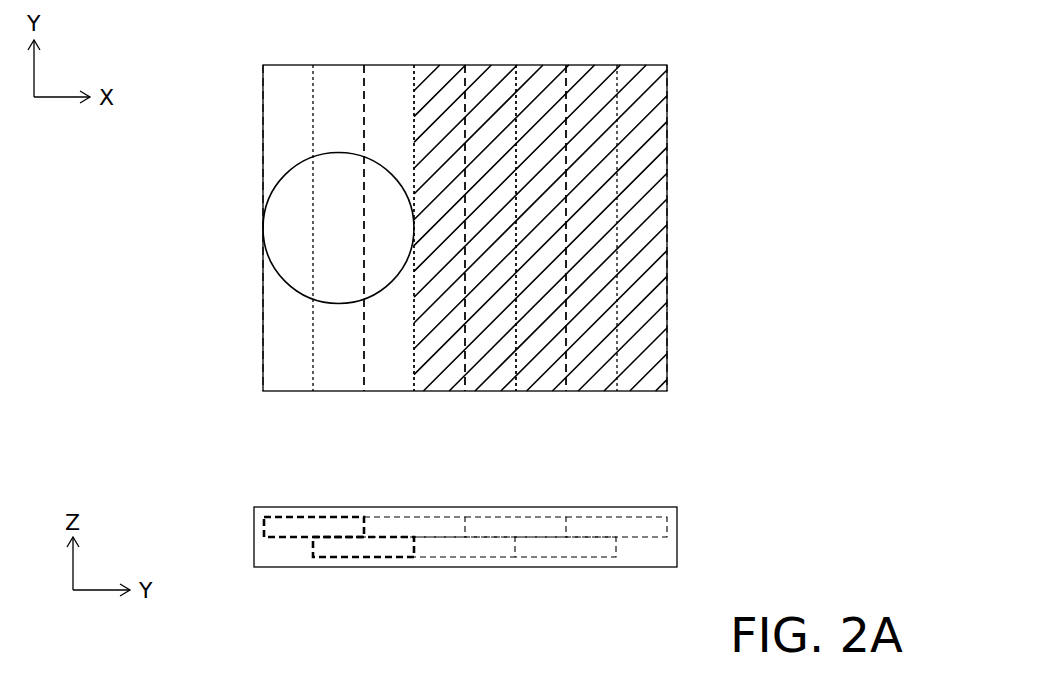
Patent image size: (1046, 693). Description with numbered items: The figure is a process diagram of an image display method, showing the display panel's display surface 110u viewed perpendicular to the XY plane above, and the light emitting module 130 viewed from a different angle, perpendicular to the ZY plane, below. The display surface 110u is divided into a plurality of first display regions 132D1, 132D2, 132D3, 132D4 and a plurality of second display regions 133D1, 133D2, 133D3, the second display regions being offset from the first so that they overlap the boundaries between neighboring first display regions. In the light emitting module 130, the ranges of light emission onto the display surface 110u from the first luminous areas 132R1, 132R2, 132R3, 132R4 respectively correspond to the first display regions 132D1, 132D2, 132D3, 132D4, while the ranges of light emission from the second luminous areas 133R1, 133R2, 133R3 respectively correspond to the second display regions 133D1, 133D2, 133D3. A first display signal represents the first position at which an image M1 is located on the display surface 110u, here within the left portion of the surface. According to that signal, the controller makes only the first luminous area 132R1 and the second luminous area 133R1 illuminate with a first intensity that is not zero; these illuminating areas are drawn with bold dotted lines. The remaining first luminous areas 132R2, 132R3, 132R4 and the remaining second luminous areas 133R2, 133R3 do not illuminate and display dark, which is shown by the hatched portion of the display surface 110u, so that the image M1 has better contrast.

The display surface 110u is at (263, 133).
The image M1 is at (283, 173).
The light emitting module 130 is at (233, 484).
The second display region 133D1 is at (414, 63).
The second display region 133D2 is at (516, 63).
The second display region 133D3 is at (617, 63).
The first display region 132D1 is at (364, 391).
The first display region 132D2 is at (465, 391).
The first display region 132D3 is at (566, 391).
The first display region 132D4 is at (667, 391).
The first luminous area 132R1 is at (314, 517).
The first luminous area 132R2 is at (415, 517).
The first luminous area 132R3 is at (515, 517).
The first luminous area 132R4 is at (616, 517).
The second luminous area 133R1 is at (362, 557).
The second luminous area 133R2 is at (465, 557).
The second luminous area 133R3 is at (563, 557).